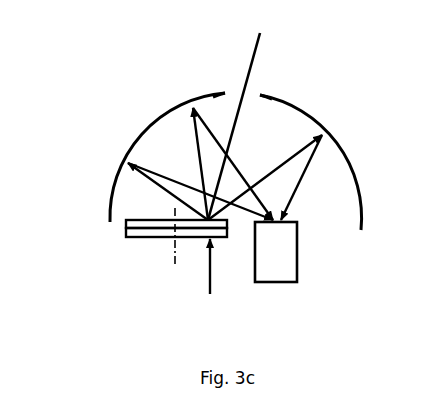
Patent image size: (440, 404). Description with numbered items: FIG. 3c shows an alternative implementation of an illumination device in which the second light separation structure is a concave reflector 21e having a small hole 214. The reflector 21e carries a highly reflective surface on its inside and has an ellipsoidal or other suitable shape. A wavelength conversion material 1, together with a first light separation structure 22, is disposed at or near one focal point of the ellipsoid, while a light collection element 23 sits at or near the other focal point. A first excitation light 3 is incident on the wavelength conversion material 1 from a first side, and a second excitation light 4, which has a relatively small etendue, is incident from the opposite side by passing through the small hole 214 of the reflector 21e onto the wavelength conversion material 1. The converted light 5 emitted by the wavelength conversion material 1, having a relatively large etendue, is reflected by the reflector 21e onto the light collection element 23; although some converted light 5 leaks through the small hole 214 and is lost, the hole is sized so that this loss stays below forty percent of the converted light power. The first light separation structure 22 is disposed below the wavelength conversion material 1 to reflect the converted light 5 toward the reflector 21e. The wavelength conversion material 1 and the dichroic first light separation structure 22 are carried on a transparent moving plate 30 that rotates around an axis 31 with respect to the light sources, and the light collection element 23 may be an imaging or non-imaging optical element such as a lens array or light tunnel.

The wavelength conversion material 1 is at (141, 249).
The first light separation structure 22 is at (127, 234).
The moving plate 30 is at (138, 238).
The axis 31 is at (170, 258).
The first excitation light 3 is at (208, 267).
The second excitation light 4 is at (251, 56).
The converted light 5 is at (262, 166).
The concave reflector 21e is at (318, 133).
The small hole 214 is at (260, 95).
The light collection element 23 is at (287, 272).